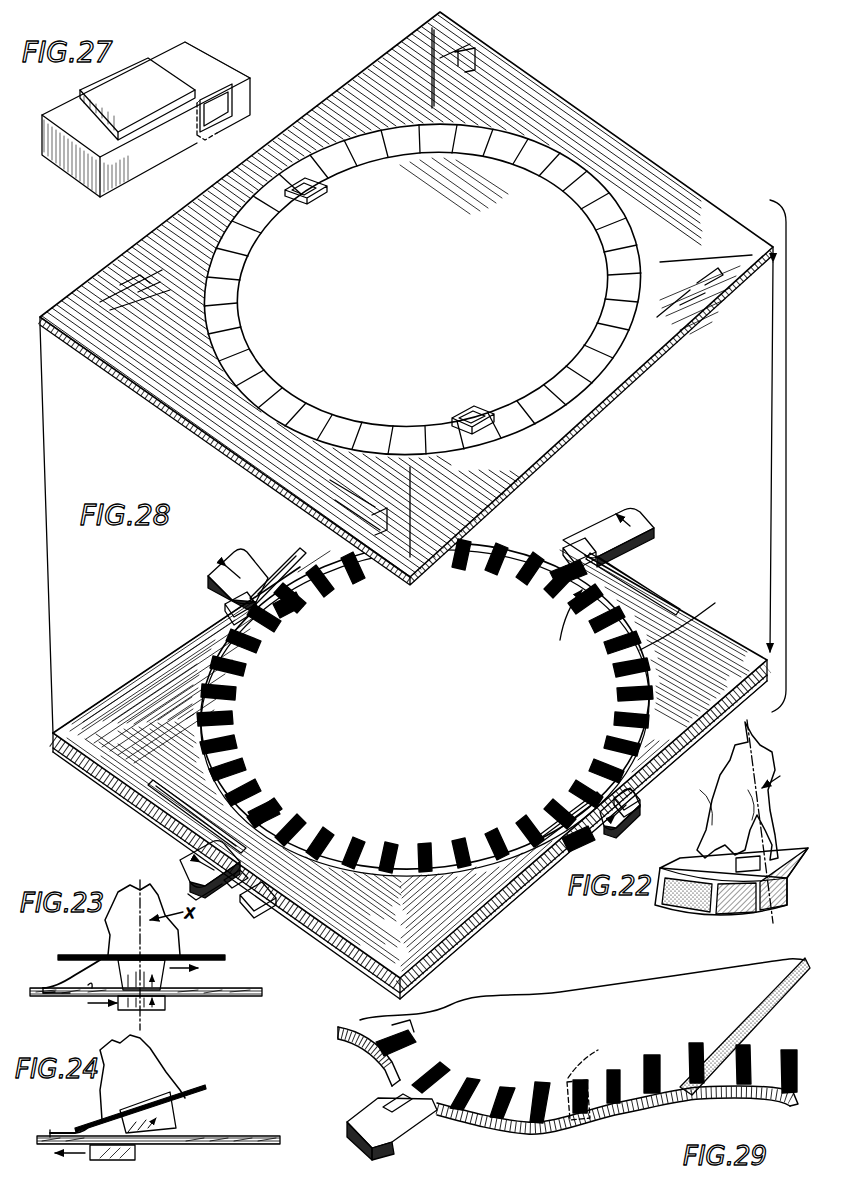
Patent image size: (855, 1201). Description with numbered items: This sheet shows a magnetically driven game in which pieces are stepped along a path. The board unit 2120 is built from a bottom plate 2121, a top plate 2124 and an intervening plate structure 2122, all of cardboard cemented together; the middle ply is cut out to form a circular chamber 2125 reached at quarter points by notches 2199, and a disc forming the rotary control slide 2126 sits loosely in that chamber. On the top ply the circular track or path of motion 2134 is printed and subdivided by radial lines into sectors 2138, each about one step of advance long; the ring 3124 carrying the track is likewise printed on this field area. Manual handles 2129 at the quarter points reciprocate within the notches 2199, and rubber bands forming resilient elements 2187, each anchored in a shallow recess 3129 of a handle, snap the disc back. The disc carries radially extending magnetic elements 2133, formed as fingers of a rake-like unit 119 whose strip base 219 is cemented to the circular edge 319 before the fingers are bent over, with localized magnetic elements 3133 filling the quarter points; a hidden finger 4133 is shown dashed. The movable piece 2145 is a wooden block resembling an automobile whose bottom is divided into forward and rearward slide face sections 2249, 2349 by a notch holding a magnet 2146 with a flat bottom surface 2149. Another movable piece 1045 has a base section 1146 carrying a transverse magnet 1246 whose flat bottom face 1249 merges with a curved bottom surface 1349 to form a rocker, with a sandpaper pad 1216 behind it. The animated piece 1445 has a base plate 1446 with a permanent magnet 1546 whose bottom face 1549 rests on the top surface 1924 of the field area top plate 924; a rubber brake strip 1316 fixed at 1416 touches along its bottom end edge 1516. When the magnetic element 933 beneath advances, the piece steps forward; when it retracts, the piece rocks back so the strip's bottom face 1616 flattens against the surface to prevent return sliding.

In FIG. 27, the movable piece 2145 is at (238, 68).
In FIG. 28, the movable piece 2145 is at (300, 172).
In FIG. 27, the magnet 2146 is at (232, 112).
In FIG. 27, the forward slide face section 2249 is at (236, 120).
In FIG. 27, the flat bottom surface 2149 is at (218, 130).
In FIG. 27, the rearward slide face section 2349 is at (150, 172).
In FIG. 28, the sectors 2138 is at (465, 107).
In FIG. 28, the outer ring 3124 is at (548, 148).
In FIG. 28, the circular track or path of motion 2134 is at (566, 168).
In FIG. 28, the top plate 2124 is at (662, 170).
In FIG. 28, the board unit 2120 is at (796, 456).
In FIG. 28, the magnetic elements 2133 is at (525, 570).
In FIG. 29, the magnetic elements 2133 is at (385, 1050).
In FIG. 28, the notches 2199 is at (228, 606).
In FIG. 28, the manual handles 2129 is at (230, 562).
In FIG. 29, the manual handles 2129 is at (372, 1152).
In FIG. 28, the resilient elements 2187 is at (278, 572).
In FIG. 28, the circular chamber 2125 is at (689, 617).
In FIG. 28, the rotary control slide 2126 is at (429, 707).
In FIG. 29, the rotary control slide 2126 is at (612, 1010).
In FIG. 28, the localized magnetic elements 3133 is at (292, 612).
In FIG. 29, the localized magnetic elements 3133 is at (440, 1068).
In FIG. 28, the bottom plate 2121 is at (516, 906).
In FIG. 28, the intervening plate structure 2122 is at (487, 930).
In FIG. 22, the movable piece 1045 is at (752, 742).
In FIG. 22, the base section 1146 is at (772, 855).
In FIG. 22, the transverse magnet 1246 is at (757, 905).
In FIG. 22, the pad 1216 is at (678, 905).
In FIG. 22, the flat bottom face 1249 is at (735, 910).
In FIG. 22, the bottom surface 1349 is at (782, 890).
In FIG. 23, the animated piece 1445 is at (180, 937).
In FIG. 24, the animated piece 1445 is at (173, 1060).
In FIG. 23, the base plate 1446 is at (190, 957).
In FIG. 24, the base plate 1446 is at (205, 1087).
In FIG. 23, the fixing point 1416 is at (80, 962).
In FIG. 24, the fixing point 1416 is at (80, 1125).
In FIG. 23, the brake strip 1316 is at (60, 982).
In FIG. 24, the brake strip 1316 is at (78, 1128).
In FIG. 23, the bottom end edge 1516 is at (48, 987).
In FIG. 23, the permanent magnet 1546 is at (170, 978).
In FIG. 24, the permanent magnet 1546 is at (172, 1108).
In FIG. 23, the field area top plate 924 is at (45, 998).
In FIG. 24, the field area top plate 924 is at (245, 1146).
In FIG. 23, the top surface 1924 is at (88, 990).
In FIG. 24, the top surface 1924 is at (235, 1136).
In FIG. 23, the bottom face 1549 is at (166, 1005).
In FIG. 24, the bottom face 1549 is at (140, 1140).
In FIG. 23, the magnetic element 933 is at (150, 1012).
In FIG. 24, the magnetic element 933 is at (118, 1161).
In FIG. 24, the bottom face 1616 is at (48, 1146).
In FIG. 29, the circular edge 319 is at (760, 1015).
In FIG. 29, the rake-like unit 119 is at (345, 1045).
In FIG. 29, the strip base 219 is at (340, 1031).
In FIG. 29, the hidden magnet 4133 is at (596, 1078).
In FIG. 28, the shallow recess 3129 is at (230, 884).
In FIG. 29, the shallow recess 3129 is at (385, 1104).